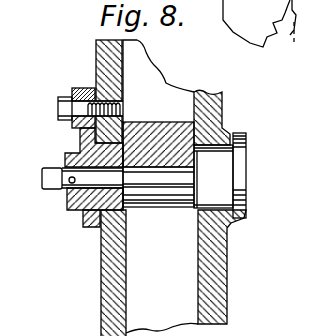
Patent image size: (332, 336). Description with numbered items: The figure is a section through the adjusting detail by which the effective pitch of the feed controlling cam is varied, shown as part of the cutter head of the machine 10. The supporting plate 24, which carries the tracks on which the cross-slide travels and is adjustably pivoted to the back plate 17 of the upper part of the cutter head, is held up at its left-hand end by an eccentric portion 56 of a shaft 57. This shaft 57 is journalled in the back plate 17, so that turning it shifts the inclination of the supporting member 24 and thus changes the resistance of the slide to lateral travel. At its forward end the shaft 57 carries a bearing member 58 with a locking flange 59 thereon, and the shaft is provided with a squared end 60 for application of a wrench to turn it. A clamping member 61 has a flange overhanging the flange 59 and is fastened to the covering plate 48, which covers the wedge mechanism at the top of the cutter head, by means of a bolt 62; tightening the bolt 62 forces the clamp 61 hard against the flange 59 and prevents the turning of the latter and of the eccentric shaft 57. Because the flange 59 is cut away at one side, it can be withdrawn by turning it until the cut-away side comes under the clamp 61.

The machine frame fragment 10 is at (285, 38).
The back plate 17 is at (219, 256).
The supporting plate 24 is at (158, 125).
The covering plate 48 is at (102, 277).
The eccentric portion 56 is at (163, 197).
The shaft 57 is at (220, 175).
The bearing member 58 is at (84, 208).
The locking flange 59 is at (90, 226).
The squared end 60 is at (55, 189).
The clamping member 61 is at (80, 88).
The bolt 62 is at (58, 111).